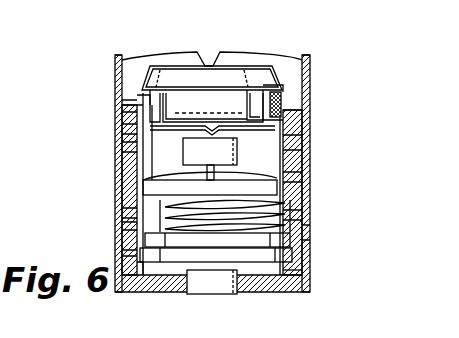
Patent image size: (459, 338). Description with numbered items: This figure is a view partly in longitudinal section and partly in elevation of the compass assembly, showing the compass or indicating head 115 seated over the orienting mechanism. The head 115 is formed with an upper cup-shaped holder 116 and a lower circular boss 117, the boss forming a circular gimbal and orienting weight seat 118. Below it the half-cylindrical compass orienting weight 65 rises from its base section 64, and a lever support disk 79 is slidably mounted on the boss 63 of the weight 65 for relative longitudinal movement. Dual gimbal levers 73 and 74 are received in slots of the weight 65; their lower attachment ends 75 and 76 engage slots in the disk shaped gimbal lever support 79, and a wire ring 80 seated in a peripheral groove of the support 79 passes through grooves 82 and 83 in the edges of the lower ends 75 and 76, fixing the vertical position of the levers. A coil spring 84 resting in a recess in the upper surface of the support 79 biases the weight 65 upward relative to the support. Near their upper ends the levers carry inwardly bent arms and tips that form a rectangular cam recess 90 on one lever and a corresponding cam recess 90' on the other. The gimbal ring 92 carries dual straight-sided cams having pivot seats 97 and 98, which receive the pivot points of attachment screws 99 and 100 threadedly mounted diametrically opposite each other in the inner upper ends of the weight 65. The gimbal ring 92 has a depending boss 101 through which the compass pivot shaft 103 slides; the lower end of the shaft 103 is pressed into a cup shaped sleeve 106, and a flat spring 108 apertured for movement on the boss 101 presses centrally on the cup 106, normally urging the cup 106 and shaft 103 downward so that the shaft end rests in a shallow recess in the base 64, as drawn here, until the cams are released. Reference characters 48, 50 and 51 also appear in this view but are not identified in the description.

The lead wire 48 is at (216, 62).
The housing 50 is at (290, 260).
The housing wall 51 is at (298, 201).
The boss 63 is at (130, 217).
The base section 64 is at (128, 198).
The compass orienting weight 65 is at (290, 140).
The gimbal lever 73 is at (128, 213).
The gimbal lever 74 is at (300, 232).
The lower attachment end 75 is at (128, 252).
The lower attachment end 76 is at (308, 280).
The gimbal lever support 79 is at (128, 241).
The wire ring 80 is at (281, 262).
The groove 82 is at (146, 262).
The groove 83 is at (292, 274).
The coil spring 84 is at (288, 214).
The cam recess 90 is at (109, 127).
The cam recess 90' is at (222, 159).
The gimbal ring 92 is at (282, 66).
The pivot seat 97 is at (128, 99).
The pivot seat 98 is at (282, 96).
The attachment screw 99 is at (122, 106).
The attachment screw 100 is at (282, 104).
The depending boss 101 is at (282, 126).
The compass pivot shaft 103 is at (128, 180).
The cup shaped sleeve 106 is at (288, 176).
The flat spring 108 is at (126, 144).
The compass or indicating head 115 is at (118, 61).
The upper cup-shaped holder 116 is at (282, 88).
The lower circular boss 117 is at (247, 95).
The gimbal and orienting weight seat 118 is at (145, 90).